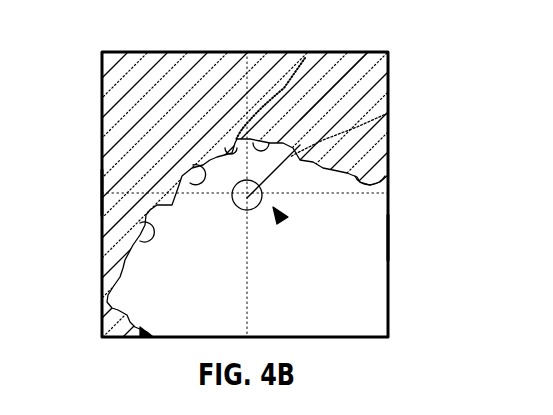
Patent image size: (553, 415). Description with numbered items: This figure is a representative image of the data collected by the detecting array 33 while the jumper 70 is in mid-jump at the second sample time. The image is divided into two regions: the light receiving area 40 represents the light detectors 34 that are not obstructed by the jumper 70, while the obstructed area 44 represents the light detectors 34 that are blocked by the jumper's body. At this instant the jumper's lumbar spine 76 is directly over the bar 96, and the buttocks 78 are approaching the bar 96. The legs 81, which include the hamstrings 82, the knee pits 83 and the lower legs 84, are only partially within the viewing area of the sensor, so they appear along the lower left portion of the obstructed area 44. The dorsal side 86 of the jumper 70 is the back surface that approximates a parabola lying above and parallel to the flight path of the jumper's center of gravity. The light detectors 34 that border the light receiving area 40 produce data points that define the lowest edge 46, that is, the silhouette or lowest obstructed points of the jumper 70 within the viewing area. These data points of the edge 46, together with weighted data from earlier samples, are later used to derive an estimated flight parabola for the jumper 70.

The detecting array 33 is at (392, 65).
The light detectors 34 is at (190, 180).
The light receiving area 40 is at (390, 243).
The obstructed area 44 is at (118, 82).
The lowest edge 46 is at (387, 175).
The jumper 70 is at (338, 72).
The lumbar spine 76 is at (305, 58).
The buttocks 78 is at (198, 185).
The legs 81 is at (95, 192).
The hamstrings 82 is at (133, 243).
The knee pits 83 is at (128, 283).
The lower legs 84 is at (100, 327).
The dorsal side 86 is at (283, 219).
The bar 96 is at (390, 115).